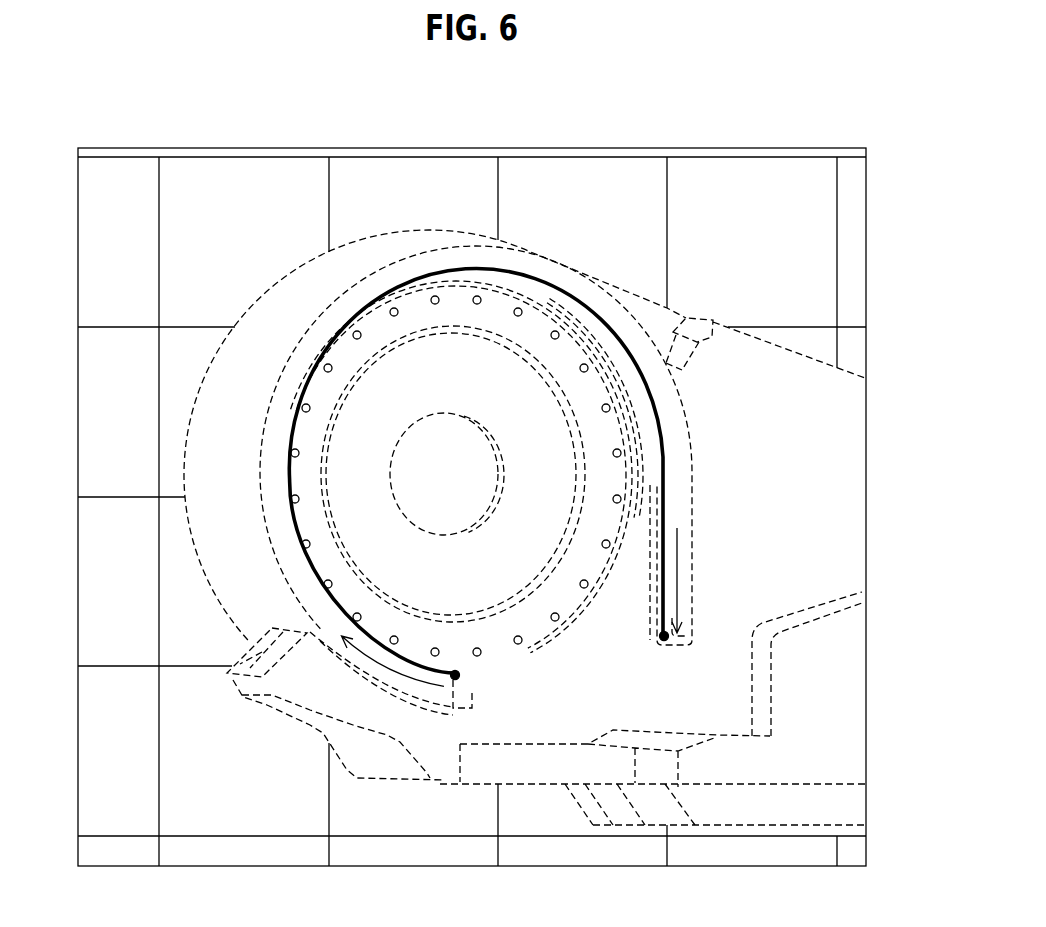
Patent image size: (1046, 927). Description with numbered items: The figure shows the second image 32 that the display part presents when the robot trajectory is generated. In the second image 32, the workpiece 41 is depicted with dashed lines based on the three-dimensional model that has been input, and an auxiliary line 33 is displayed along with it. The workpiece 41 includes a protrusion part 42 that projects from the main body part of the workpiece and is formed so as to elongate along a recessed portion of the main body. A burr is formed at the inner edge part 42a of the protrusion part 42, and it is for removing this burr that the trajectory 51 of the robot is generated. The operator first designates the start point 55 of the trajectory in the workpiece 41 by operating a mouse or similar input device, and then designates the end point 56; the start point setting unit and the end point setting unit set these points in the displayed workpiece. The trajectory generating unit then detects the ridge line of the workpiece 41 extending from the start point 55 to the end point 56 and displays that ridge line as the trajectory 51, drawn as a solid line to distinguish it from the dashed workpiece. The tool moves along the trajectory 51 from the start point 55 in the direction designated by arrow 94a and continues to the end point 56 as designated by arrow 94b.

The second image 32 is at (750, 147).
The auxiliary line 33 is at (160, 190).
The workpiece 41 is at (392, 238).
The protrusion part 42 is at (533, 248).
The inner edge part 42a is at (458, 270).
The trajectory 51 is at (560, 293).
The start point 55 is at (455, 678).
The end point 56 is at (664, 640).
The arrow 94a is at (393, 674).
The arrow 94b is at (678, 568).